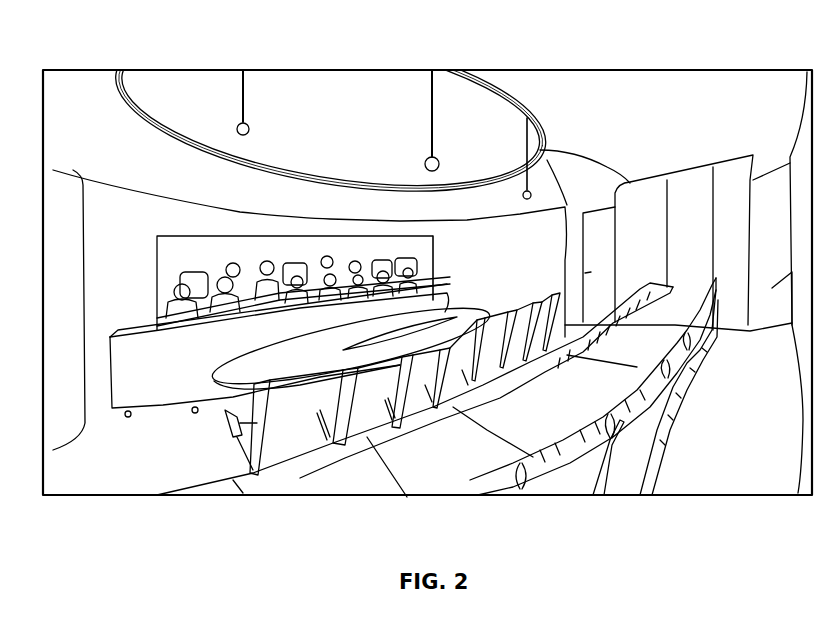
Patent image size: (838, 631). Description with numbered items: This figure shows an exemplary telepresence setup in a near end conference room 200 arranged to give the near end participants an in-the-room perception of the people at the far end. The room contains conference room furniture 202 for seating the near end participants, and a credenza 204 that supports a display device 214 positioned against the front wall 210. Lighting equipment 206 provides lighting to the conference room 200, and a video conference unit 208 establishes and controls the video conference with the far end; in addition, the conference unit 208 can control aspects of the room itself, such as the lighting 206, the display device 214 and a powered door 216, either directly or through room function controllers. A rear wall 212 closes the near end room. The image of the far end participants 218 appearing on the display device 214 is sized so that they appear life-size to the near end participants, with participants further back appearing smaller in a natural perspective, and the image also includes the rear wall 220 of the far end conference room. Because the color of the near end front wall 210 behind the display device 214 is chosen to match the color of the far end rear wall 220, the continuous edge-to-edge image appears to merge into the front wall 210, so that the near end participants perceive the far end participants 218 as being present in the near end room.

The near end conference room 200 is at (678, 50).
The conference room furniture 202 is at (338, 366).
The credenza 204 is at (162, 380).
The lighting equipment 206 is at (502, 77).
The video conference unit 208 is at (440, 330).
The front wall 210 is at (133, 223).
The rear wall 212 is at (780, 205).
The display device 214 is at (433, 262).
The powered door 216 is at (603, 230).
The far end participants 218 is at (267, 262).
The rear wall 220 is at (193, 253).